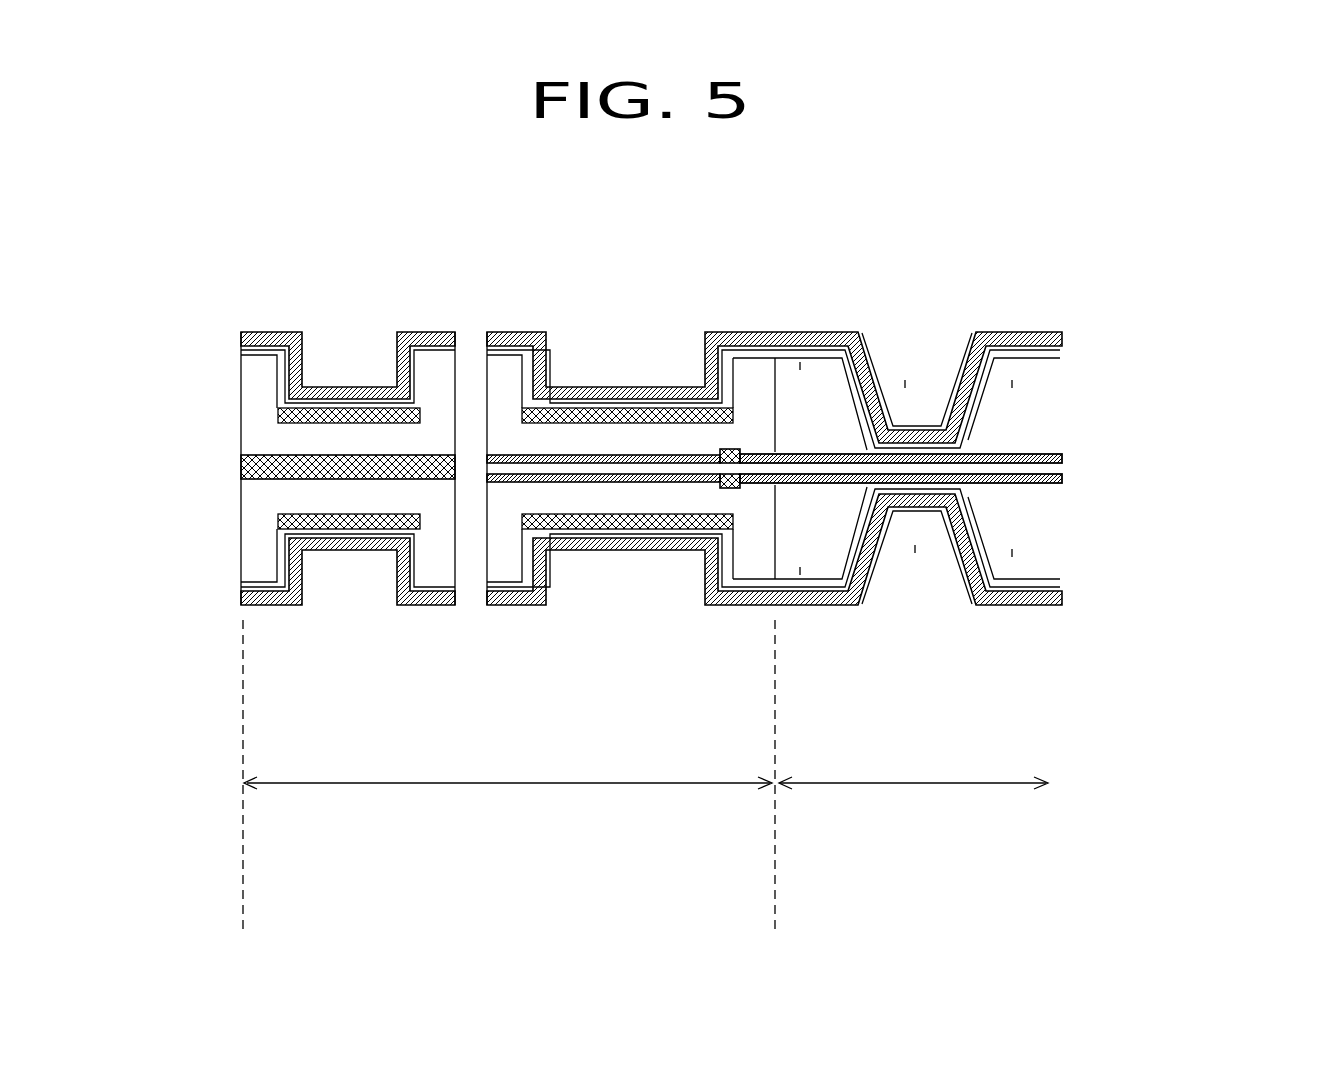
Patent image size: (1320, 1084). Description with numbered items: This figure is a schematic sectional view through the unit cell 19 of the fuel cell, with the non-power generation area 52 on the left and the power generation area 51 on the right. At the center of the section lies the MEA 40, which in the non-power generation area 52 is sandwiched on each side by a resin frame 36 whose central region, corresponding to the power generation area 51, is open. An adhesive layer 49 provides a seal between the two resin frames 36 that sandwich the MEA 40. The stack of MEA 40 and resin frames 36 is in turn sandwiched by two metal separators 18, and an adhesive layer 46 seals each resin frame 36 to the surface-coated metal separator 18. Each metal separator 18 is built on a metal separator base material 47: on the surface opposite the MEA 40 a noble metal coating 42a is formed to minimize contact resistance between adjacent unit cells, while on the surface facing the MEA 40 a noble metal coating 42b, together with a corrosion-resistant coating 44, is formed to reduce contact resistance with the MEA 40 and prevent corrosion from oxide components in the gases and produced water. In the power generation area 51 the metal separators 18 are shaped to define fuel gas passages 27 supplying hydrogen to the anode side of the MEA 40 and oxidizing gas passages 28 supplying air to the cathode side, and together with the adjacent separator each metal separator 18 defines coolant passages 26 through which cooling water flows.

The metal separator 18 is at (1150, 312).
The unit cell 19 is at (1210, 312).
The coolant passage 26 is at (912, 360).
The fuel gas passage 27 is at (805, 365).
The oxidizing gas passage 28 is at (800, 570).
The resin frame 36 is at (258, 384).
The MEA 40 is at (1066, 452).
The noble metal coating 42a is at (1000, 347).
The noble metal coating 42b is at (1063, 350).
The corrosion-resistant coating 44 is at (1063, 358).
The adhesive layer 46 is at (282, 415).
The metal separator base material 47 is at (1063, 335).
The adhesive layer 49 is at (245, 466).
The power generation area 51 is at (980, 777).
The non-power generation area 52 is at (507, 777).